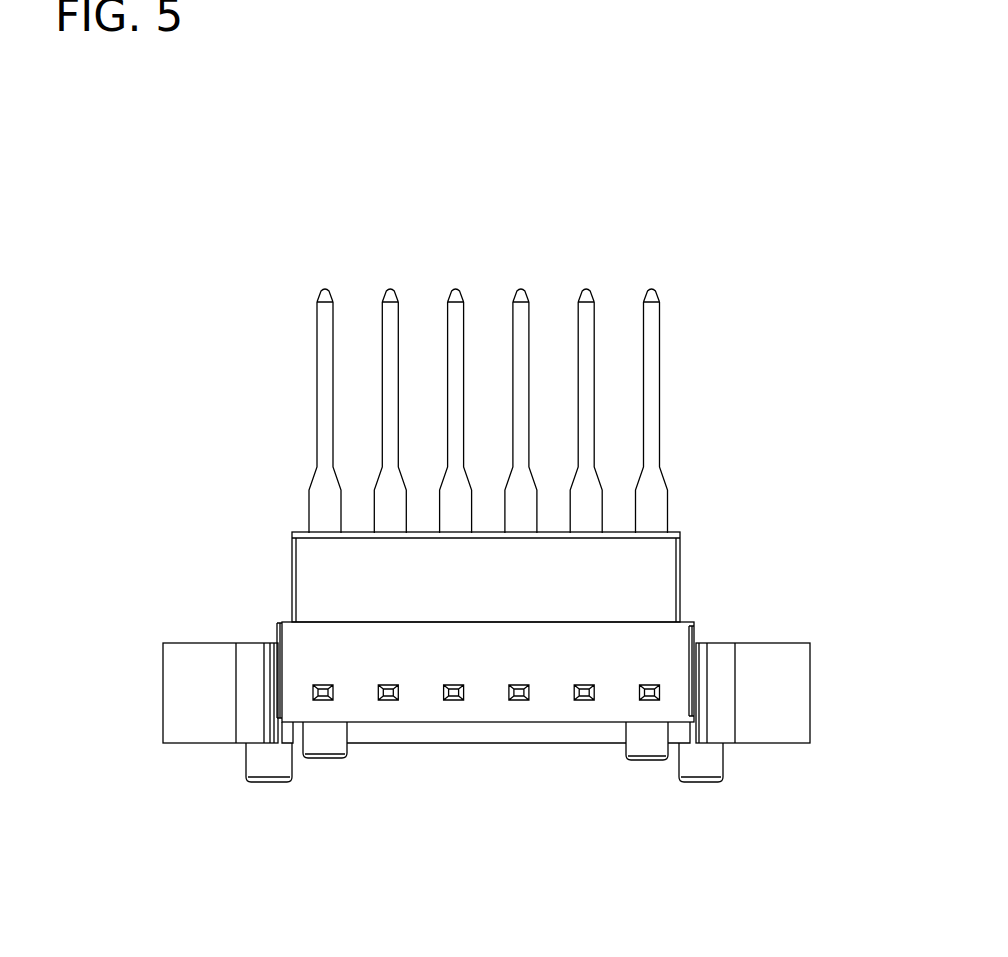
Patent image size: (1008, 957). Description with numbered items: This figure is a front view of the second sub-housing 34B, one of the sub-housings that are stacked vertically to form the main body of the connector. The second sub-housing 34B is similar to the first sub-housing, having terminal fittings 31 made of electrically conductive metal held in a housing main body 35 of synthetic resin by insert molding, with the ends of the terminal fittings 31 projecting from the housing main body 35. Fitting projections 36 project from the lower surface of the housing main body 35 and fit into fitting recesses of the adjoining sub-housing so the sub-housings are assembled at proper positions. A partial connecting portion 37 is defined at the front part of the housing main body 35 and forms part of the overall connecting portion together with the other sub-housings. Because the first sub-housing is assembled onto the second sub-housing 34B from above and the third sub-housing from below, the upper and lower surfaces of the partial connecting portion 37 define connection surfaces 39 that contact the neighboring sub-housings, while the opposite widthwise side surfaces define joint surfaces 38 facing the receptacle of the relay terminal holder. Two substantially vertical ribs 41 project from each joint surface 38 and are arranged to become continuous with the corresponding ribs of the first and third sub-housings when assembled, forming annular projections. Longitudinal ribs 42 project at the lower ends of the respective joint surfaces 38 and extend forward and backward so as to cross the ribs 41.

The second sub-housing 34B is at (203, 247).
The terminal fitting 31 is at (323, 313).
The housing main body 35 is at (212, 647).
The fitting projection 36 is at (327, 753).
The partial connecting portion 37 is at (700, 633).
The joint surface 38 is at (278, 640).
The connection surface 39 is at (596, 620).
The rib 41 is at (277, 696).
The longitudinal rib 42 is at (278, 718).